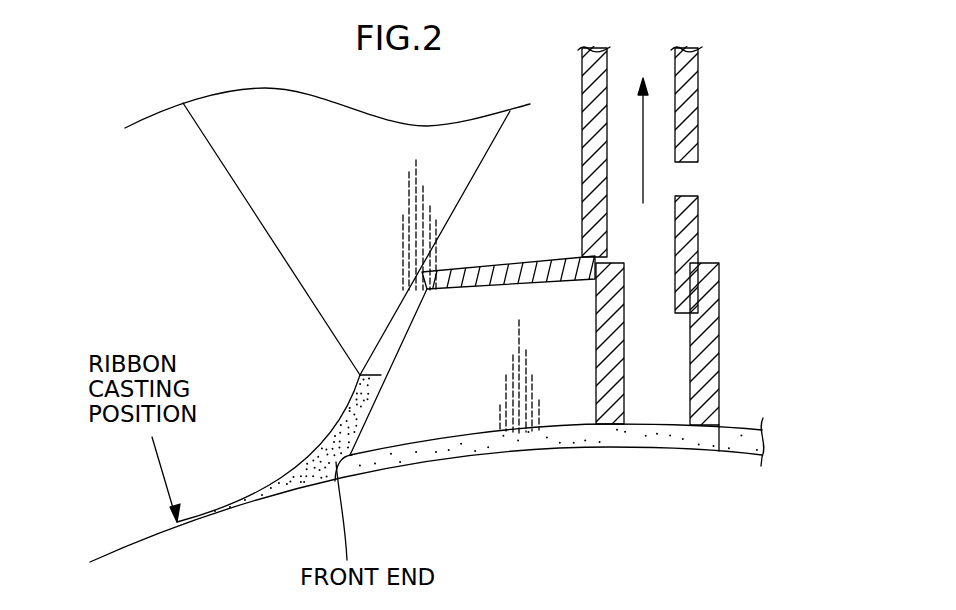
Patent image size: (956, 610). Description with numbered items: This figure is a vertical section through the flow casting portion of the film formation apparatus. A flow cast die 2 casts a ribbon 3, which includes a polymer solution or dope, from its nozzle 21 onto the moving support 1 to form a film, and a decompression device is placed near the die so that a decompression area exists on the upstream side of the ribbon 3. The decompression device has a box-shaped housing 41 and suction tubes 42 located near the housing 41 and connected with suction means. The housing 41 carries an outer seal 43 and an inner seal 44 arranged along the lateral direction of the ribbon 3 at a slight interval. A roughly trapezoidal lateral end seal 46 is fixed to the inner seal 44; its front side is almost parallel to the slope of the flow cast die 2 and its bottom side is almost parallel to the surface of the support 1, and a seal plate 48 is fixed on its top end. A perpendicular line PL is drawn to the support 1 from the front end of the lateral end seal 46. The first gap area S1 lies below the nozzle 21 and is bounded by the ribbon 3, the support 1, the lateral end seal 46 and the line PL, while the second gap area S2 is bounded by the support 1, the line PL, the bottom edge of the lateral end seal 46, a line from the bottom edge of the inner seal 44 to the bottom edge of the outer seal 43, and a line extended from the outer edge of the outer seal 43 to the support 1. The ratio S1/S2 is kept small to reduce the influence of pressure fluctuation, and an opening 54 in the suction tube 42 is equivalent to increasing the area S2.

The support 1 is at (597, 450).
The flow cast die 2 is at (272, 240).
The nozzle 21 is at (360, 375).
The ribbon 3 is at (323, 428).
The housing 41 is at (724, 238).
The suction tube 42 is at (698, 101).
The outer seal 43 is at (720, 352).
The inner seal 44 is at (625, 377).
The lateral end seal 46 is at (490, 290).
The seal plate 48 is at (540, 262).
The opening 54 is at (689, 189).
The area of first gap S1 is at (290, 483).
The area of second gap S2 is at (515, 448).
The perpendicular line PL is at (353, 464).